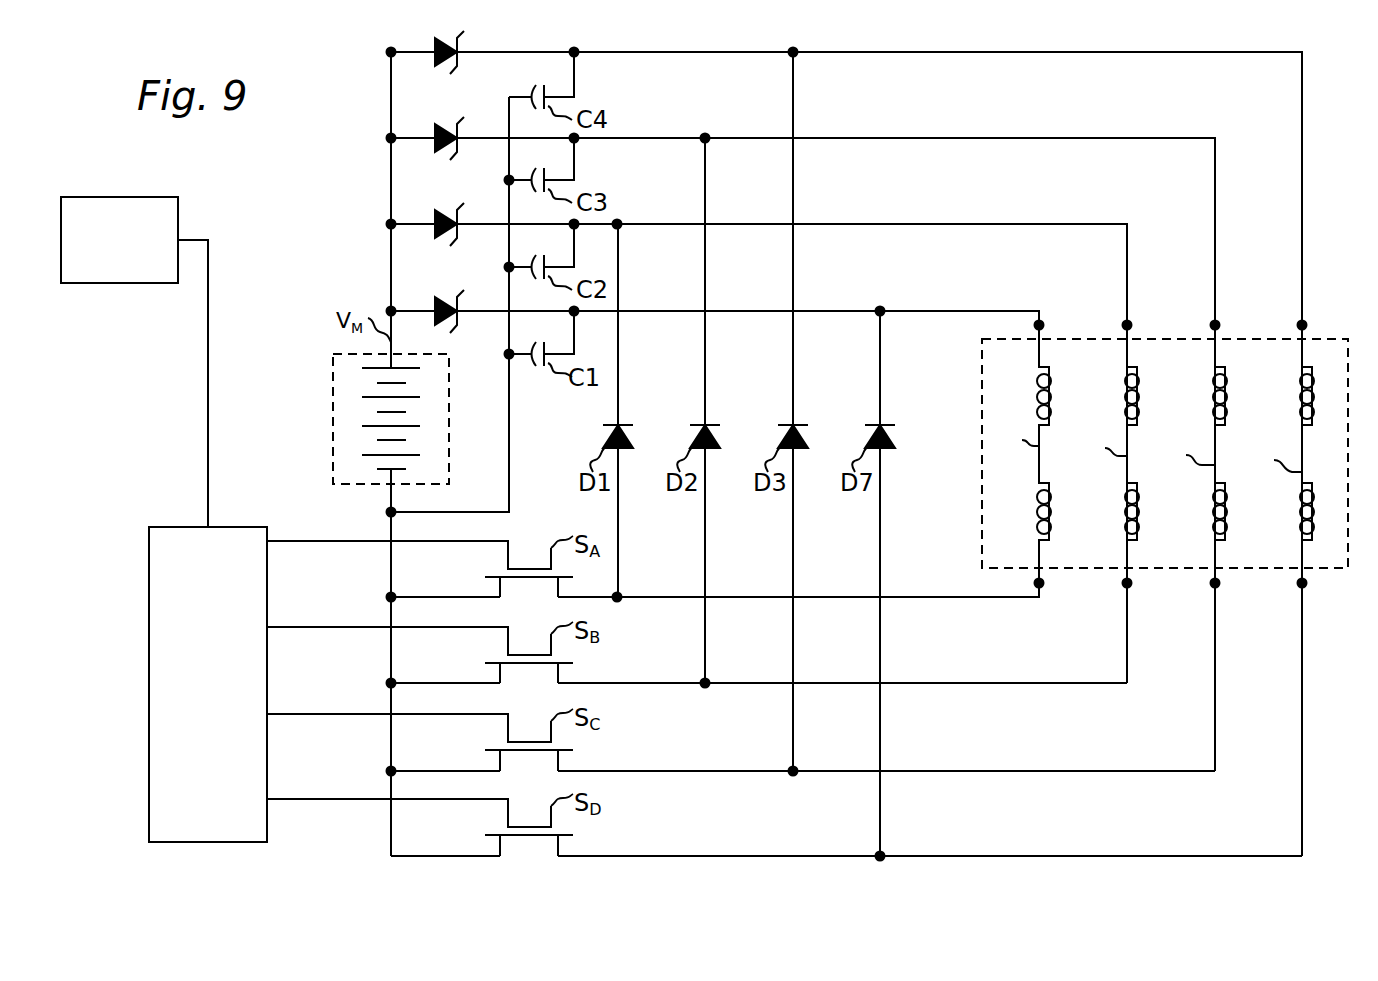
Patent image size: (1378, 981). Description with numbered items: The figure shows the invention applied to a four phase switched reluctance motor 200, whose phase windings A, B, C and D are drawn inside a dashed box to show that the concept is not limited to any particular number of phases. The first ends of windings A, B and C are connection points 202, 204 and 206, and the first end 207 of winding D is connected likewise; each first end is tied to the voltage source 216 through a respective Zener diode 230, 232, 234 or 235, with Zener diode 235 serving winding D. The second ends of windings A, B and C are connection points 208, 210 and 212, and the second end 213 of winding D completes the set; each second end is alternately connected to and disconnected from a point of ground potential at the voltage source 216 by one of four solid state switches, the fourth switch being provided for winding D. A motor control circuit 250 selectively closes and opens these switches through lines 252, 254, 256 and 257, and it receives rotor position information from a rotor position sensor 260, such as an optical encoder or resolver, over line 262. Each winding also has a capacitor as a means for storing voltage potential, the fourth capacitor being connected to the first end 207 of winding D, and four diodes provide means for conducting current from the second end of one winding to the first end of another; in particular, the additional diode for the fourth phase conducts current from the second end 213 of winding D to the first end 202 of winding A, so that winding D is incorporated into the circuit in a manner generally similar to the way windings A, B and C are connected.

The switched reluctance motor 200 is at (980, 521).
The connection point 202 is at (1039, 325).
The connection point 204 is at (1127, 325).
The connection point 206 is at (1217, 325).
The first end of stator winding D 207 is at (1302, 325).
The connection point 208 is at (1042, 586).
The connection point 210 is at (1130, 586).
The connection point 212 is at (1218, 586).
The second end of stator winding D 213 is at (1305, 586).
The voltage source 216 is at (333, 390).
The Zener diode 230 is at (482, 294).
The Zener diode 232 is at (482, 206).
The Zener diode 234 is at (482, 122).
The Zener diode 235 is at (442, 50).
The motor control circuit 250 is at (168, 527).
The line 252 is at (364, 541).
The line 254 is at (368, 627).
The line 256 is at (368, 712).
The line 257 is at (368, 798).
The rotor position sensor 260 is at (176, 206).
The line 262 is at (208, 312).